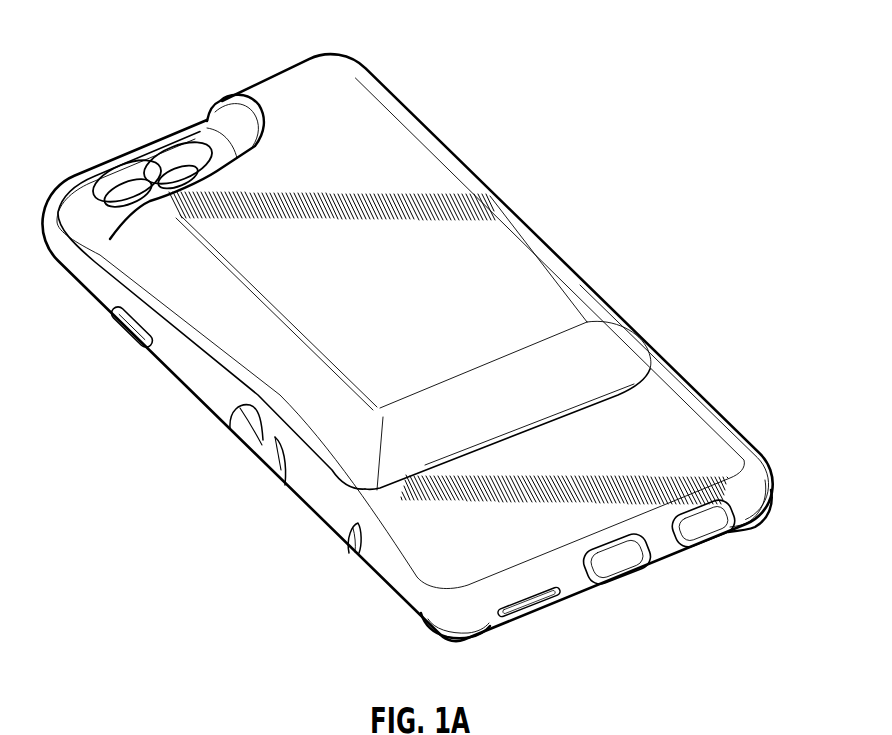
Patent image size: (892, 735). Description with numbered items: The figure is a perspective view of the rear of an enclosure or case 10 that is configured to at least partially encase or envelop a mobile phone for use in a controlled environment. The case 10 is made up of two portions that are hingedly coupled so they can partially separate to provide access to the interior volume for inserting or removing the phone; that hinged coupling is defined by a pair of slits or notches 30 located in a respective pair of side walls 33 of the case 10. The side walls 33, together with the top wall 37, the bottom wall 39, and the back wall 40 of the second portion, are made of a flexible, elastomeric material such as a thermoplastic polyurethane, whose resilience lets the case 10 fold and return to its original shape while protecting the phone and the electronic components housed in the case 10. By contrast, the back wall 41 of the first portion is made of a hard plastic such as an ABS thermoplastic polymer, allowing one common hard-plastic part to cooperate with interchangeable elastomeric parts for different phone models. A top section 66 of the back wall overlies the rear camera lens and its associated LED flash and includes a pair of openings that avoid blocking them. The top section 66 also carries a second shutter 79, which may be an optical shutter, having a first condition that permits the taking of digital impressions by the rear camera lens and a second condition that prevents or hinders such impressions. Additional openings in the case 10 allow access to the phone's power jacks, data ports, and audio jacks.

The case 10 is at (415, 60).
The slits or notches 30 is at (347, 550).
The side walls 33 is at (326, 497).
The top wall 37 is at (187, 130).
The bottom wall 39 is at (663, 547).
The back wall 40 is at (682, 413).
The back wall 41 is at (552, 278).
The top section 66 is at (87, 187).
The second shutter 79 is at (138, 160).